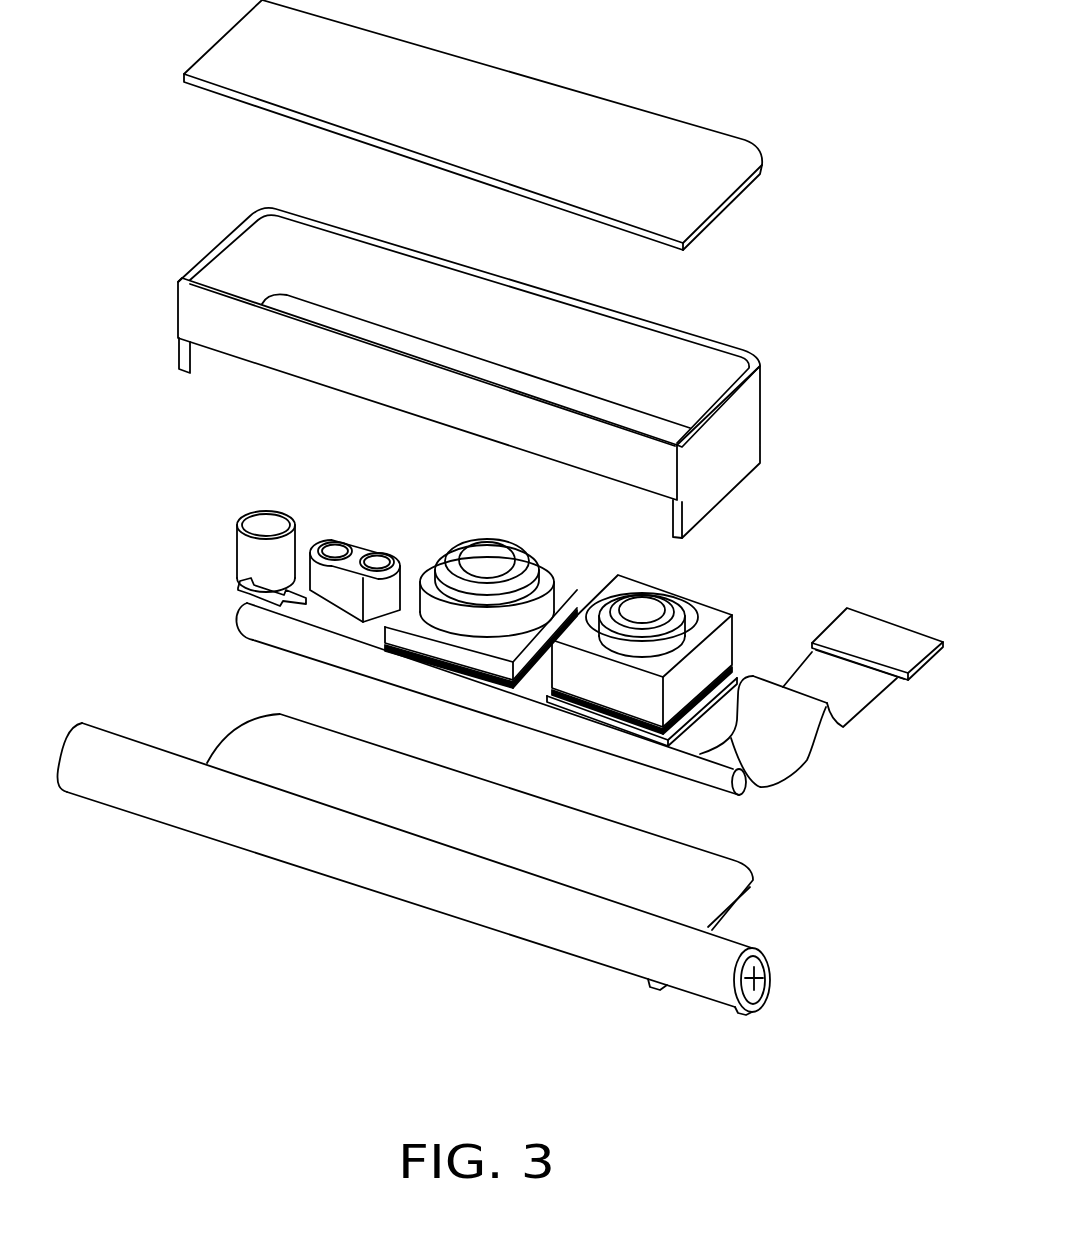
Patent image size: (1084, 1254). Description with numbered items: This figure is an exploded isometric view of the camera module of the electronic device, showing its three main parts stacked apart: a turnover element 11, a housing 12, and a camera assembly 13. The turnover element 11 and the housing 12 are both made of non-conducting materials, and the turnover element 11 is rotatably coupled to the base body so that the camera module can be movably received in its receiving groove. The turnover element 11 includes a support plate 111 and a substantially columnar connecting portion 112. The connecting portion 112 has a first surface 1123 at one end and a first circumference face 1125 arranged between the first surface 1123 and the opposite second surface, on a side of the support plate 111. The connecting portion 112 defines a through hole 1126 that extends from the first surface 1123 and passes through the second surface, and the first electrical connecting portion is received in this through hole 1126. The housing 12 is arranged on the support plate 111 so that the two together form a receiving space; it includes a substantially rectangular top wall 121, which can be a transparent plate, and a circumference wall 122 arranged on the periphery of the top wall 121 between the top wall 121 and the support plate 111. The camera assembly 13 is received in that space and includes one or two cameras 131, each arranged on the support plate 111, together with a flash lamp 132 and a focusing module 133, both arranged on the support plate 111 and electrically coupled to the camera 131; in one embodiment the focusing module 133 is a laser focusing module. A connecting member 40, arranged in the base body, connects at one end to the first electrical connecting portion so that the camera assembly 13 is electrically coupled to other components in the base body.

The turnover element 11 is at (480, 890).
The support plate 111 is at (713, 901).
The connecting portion 112 is at (477, 894).
The first surface 1123 is at (740, 1010).
The first circumference face 1125 is at (392, 858).
The through hole 1126 is at (757, 977).
The housing 12 is at (540, 269).
The top wall 121 is at (697, 173).
The circumference wall 122 is at (733, 445).
The camera assembly 13 is at (438, 579).
The camera 131 is at (643, 608).
The flash lamp 132 is at (250, 557).
The focusing module 133 is at (340, 583).
The connecting member 40 is at (855, 692).